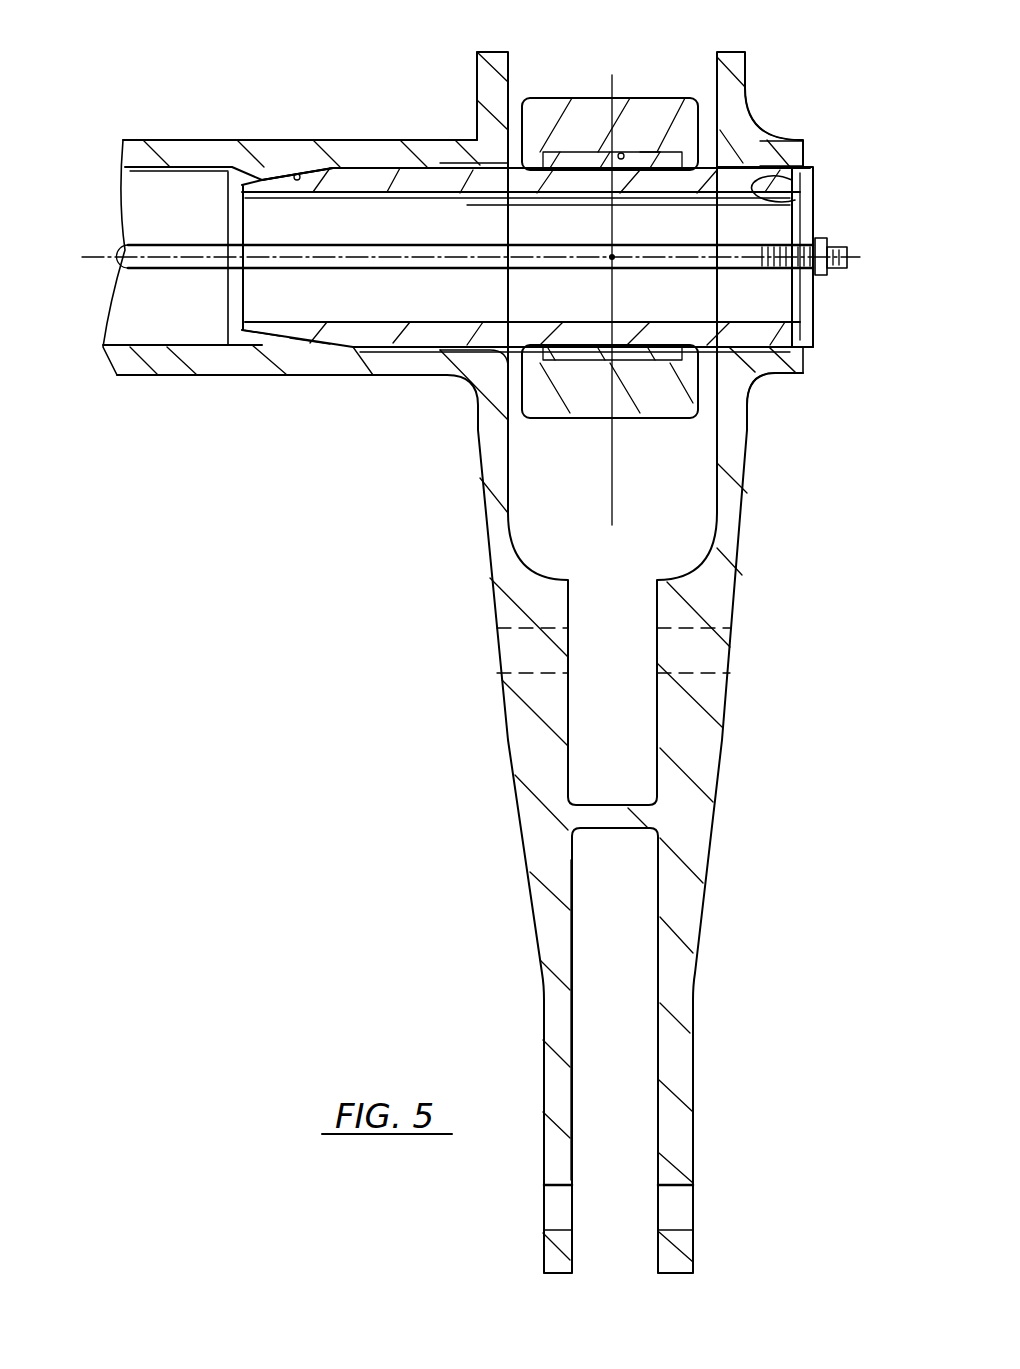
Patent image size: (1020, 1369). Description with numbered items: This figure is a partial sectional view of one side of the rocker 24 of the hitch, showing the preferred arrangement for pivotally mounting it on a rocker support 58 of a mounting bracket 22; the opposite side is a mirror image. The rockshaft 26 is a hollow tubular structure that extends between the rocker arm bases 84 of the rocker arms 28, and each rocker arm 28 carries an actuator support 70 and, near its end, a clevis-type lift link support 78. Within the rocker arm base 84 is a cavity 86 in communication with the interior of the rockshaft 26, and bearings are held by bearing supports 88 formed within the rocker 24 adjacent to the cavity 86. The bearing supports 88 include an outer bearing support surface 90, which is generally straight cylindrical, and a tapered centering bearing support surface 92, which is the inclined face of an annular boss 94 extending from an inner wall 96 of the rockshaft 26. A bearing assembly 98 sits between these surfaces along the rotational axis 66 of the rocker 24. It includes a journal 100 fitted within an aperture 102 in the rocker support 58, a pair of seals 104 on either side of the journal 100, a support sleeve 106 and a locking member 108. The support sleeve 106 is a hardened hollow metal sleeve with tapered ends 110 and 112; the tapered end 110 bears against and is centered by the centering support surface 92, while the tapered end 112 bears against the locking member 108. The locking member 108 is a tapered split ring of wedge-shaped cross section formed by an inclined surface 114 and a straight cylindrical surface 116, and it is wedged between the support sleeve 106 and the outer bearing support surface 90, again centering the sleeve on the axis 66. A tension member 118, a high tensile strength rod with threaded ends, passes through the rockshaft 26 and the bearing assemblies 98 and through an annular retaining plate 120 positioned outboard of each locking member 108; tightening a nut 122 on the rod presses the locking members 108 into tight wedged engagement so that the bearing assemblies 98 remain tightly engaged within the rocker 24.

The bracket 22 is at (585, 420).
The rocker 24 is at (135, 377).
The rockshaft 26 is at (168, 140).
The rocker arm 28 is at (702, 830).
The rocker support 58 is at (568, 98).
The rotational axis 66 is at (91, 257).
The actuator support 70 is at (722, 658).
The lift link support 78 is at (693, 1270).
The rocker arm base 84 is at (745, 68).
The cavity 86 is at (687, 520).
The bearing support 88 is at (277, 173).
The outer bearing support surface 90 is at (778, 378).
The centering bearing support surface 92 is at (297, 174).
The annular boss 94 is at (273, 337).
The inner wall 96 is at (193, 348).
The bearing assembly 98 is at (505, 152).
The journal 100 is at (648, 155).
The aperture 102 is at (622, 152).
The seal 104 is at (531, 98).
The support sleeve 106 is at (420, 338).
The locking member 108 is at (808, 167).
The tapered end 110 is at (307, 342).
The tapered end 112 is at (800, 148).
The inclined surface 114 is at (793, 222).
The straight cylindrical surface 116 is at (752, 182).
The tension member 118 is at (167, 245).
The annular retaining plate 120 is at (816, 307).
The nut 122 is at (828, 270).